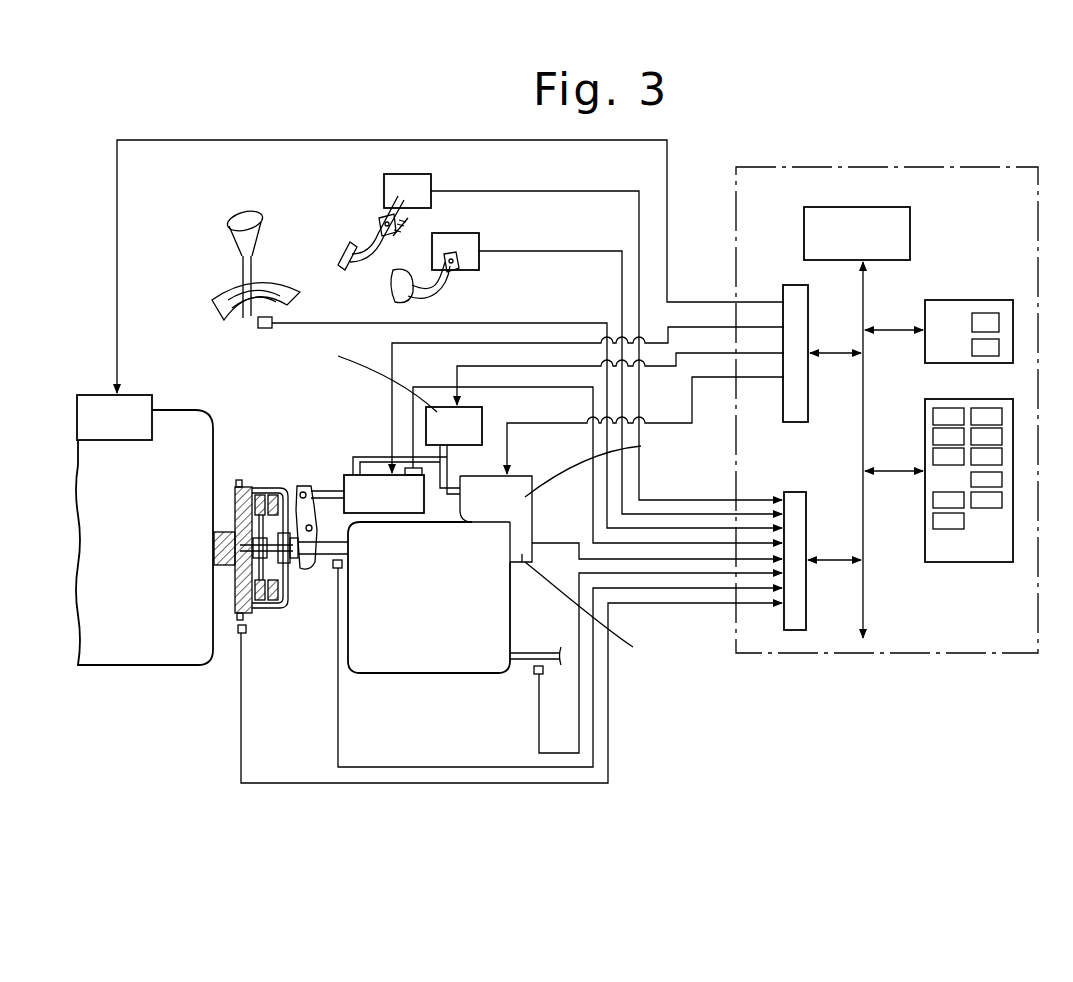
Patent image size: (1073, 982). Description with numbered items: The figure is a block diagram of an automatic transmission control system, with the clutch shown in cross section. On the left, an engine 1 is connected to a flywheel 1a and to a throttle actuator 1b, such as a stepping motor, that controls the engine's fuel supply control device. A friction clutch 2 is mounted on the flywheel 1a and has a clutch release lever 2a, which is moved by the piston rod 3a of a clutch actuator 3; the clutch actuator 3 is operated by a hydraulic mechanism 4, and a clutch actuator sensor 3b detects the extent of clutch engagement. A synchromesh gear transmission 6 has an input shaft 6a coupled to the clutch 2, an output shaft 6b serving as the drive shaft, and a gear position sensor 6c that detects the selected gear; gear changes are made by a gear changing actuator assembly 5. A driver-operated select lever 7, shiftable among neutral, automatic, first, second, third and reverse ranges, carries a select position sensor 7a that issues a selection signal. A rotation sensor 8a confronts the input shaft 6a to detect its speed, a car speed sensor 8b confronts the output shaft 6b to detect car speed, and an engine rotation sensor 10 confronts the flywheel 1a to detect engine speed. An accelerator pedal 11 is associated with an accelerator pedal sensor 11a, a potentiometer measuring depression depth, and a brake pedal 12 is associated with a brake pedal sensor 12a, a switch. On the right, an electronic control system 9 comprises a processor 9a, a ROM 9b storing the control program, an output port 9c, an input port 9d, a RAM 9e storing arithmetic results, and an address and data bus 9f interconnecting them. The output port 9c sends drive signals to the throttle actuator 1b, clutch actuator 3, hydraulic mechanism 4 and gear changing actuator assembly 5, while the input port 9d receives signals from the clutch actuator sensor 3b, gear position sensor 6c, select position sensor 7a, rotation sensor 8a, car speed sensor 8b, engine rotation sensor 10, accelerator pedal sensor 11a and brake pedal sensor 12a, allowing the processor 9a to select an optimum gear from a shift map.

The engine 1 is at (200, 410).
The flywheel 1a is at (236, 486).
The throttle actuator 1b is at (87, 395).
The clutch 2 is at (266, 476).
The clutch release lever 2a is at (299, 485).
The clutch actuator 3 is at (380, 475).
The piston rod 3a is at (323, 490).
The clutch actuator sensor 3b is at (422, 472).
The hydraulic mechanism 4 is at (482, 425).
The gear changing actuator assembly 5 is at (526, 487).
The gear transmission 6 is at (451, 662).
The input shaft 6a is at (320, 557).
The output shaft 6b is at (518, 662).
The gear position sensor 6c is at (527, 566).
The select lever 7 is at (268, 265).
The select position sensor 7a is at (273, 320).
The rotation sensor 8a is at (335, 572).
The car speed sensor 8b is at (544, 675).
The electronic control system 9 is at (1000, 175).
The processor 9a is at (910, 240).
The read-only memory (ROM) 9b is at (975, 300).
The output port 9c is at (800, 423).
The input port 9d is at (807, 532).
The random-access memory (RAM) 9e is at (995, 550).
The address and data bus (BUS) 9f is at (864, 612).
The engine rotation sensor 10 is at (238, 632).
The accelerator pedal 11 is at (345, 243).
The accelerator pedal sensor 11a is at (422, 180).
The brake pedal 12 is at (390, 288).
The brake pedal sensor 12a is at (479, 245).